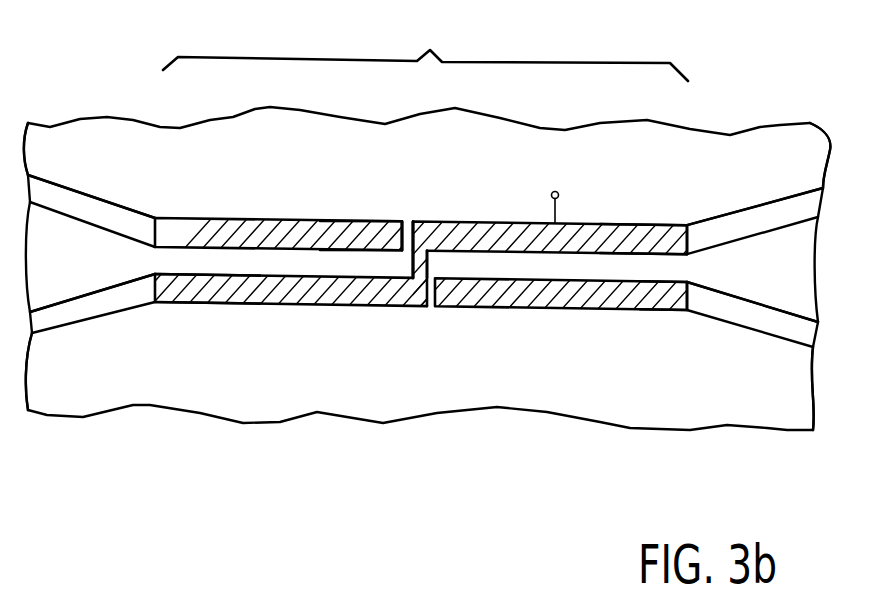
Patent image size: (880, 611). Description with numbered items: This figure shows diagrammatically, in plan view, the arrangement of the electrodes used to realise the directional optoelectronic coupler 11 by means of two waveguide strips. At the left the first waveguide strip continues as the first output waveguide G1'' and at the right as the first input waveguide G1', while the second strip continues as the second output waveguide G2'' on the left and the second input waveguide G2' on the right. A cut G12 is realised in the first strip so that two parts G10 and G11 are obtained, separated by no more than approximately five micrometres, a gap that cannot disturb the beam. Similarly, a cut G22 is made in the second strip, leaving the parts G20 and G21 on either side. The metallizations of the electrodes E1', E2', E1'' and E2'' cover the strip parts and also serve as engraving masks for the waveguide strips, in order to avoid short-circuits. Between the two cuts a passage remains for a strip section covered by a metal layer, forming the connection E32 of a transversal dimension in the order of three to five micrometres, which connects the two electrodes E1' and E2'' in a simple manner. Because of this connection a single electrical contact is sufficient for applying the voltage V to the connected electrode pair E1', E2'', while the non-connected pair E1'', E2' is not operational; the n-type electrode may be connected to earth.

The directional optoelectronic coupler 11 is at (425, 47).
The first output waveguide G1'' is at (89, 143).
The first input waveguide G1' is at (758, 147).
The second output waveguide G2'' is at (90, 373).
The second input waveguide G2' is at (752, 384).
The part of waveguide strip G1 G11 is at (287, 212).
The cut in waveguide strip G1 G12 is at (405, 210).
The part of waveguide strip G1 G10 is at (650, 213).
The part of waveguide strip G2 G21 is at (293, 316).
The cut in waveguide strip G2 G22 is at (430, 314).
The part of waveguide strip G2 G20 is at (592, 320).
The electrode E1'' is at (361, 186).
The electrode E1' is at (643, 190).
The electrode E2'' is at (207, 337).
The electrode E2' is at (665, 345).
The connection E32 is at (415, 265).
The voltage V is at (556, 191).